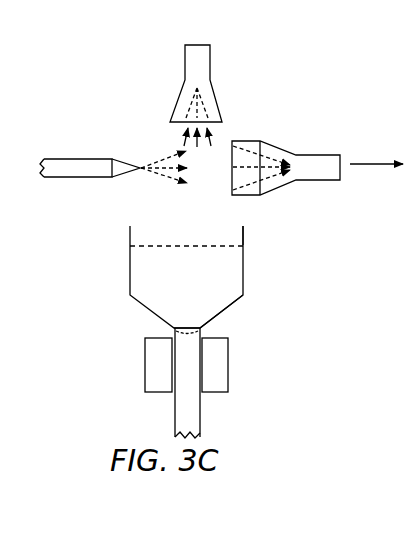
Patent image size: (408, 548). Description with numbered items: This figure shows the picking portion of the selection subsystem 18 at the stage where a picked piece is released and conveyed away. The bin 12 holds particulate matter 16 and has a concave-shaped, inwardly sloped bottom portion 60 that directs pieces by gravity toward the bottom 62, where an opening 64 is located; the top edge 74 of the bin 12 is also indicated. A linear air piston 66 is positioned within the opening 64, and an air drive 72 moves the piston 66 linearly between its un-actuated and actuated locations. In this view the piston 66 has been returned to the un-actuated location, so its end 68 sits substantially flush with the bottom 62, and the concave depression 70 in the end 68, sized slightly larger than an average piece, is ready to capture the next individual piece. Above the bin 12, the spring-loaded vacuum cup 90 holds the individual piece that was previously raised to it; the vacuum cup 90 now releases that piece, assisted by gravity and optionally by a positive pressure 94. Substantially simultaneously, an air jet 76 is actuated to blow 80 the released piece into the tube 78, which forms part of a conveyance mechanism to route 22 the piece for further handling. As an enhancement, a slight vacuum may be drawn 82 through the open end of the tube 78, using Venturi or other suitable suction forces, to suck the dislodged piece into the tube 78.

The bin 12 is at (245, 258).
The particulate matter 16 is at (154, 244).
The selection subsystem 18 is at (320, 285).
The routing 22 is at (360, 165).
The bottom portion 60 is at (256, 298).
The bottom 62 is at (206, 306).
The opening 64 is at (210, 335).
The linear air piston 66 is at (190, 214).
The end of the piston 68 is at (185, 326).
The concave depression 70 is at (170, 337).
The air drive 72 is at (222, 361).
The top edge 74 is at (245, 229).
The air jet 76 is at (118, 164).
The tube 78 is at (272, 143).
The blow 80 is at (146, 160).
The vacuum drawn 82 is at (256, 152).
The vacuum cup 90 is at (210, 63).
The positive pressure 94 is at (212, 116).